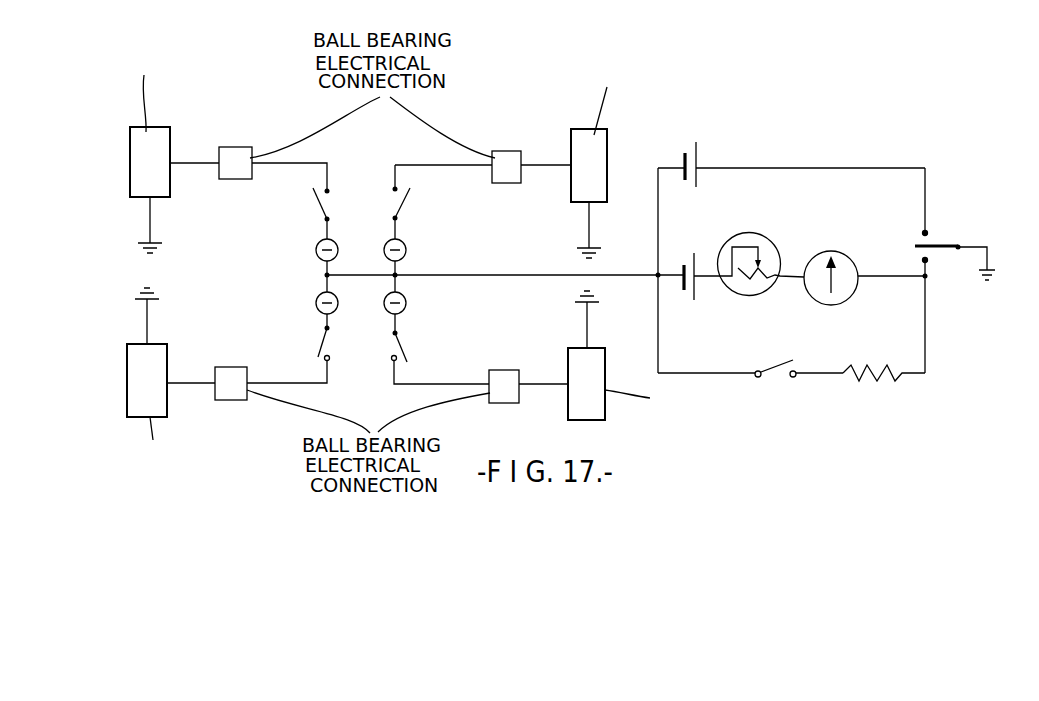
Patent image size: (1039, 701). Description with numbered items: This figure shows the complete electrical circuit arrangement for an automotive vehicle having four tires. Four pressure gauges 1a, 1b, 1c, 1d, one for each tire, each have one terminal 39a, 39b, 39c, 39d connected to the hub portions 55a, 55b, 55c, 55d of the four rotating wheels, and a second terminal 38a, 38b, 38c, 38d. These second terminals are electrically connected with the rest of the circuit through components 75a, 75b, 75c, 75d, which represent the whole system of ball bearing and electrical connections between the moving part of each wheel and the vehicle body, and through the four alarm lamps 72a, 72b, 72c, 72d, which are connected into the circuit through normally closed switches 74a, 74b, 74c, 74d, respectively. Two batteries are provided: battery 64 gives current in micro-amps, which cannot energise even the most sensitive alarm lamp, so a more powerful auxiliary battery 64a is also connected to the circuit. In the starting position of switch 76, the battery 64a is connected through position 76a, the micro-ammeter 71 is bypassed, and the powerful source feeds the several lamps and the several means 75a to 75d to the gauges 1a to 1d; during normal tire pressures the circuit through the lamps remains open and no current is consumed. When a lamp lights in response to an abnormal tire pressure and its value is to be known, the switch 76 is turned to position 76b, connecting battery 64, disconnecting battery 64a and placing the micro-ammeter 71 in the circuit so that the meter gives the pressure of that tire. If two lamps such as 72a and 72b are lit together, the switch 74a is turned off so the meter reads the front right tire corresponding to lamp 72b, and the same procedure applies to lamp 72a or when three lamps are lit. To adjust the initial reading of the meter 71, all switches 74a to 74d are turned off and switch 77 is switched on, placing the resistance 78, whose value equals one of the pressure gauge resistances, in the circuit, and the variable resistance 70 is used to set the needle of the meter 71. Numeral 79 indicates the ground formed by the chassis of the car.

The pressure gauge 1a is at (130, 140).
The pressure gauge 1b is at (125, 410).
The pressure gauge 1c is at (607, 150).
The pressure gauge 1d is at (606, 419).
The pressure gauge terminal 38a is at (191, 163).
The pressure gauge terminal 38b is at (193, 384).
The pressure gauge terminal 38c is at (541, 165).
The pressure gauge terminal 38d is at (540, 385).
The pressure gauge terminal 39a is at (150, 215).
The pressure gauge terminal 39b is at (147, 330).
The pressure gauge terminal 39c is at (589, 219).
The pressure gauge terminal 39d is at (586, 332).
The hub portion 55a is at (145, 245).
The hub portion 55b is at (143, 295).
The hub portion 55c is at (585, 249).
The hub portion 55d is at (583, 300).
The alarm lamp 72a is at (316, 244).
The alarm lamp 72b is at (316, 306).
The alarm lamp 72c is at (400, 240).
The alarm lamp 72d is at (407, 303).
The normally closed switch 74a is at (312, 194).
The normally closed switch 74b is at (318, 333).
The normally closed switch 74c is at (407, 200).
The normally closed switch 74d is at (405, 346).
The ball bearing electrical connection 75a is at (252, 148).
The ball bearing electrical connection 75b is at (246, 392).
The ball bearing electrical connection 75c is at (498, 151).
The ball bearing electrical connection 75d is at (500, 404).
The battery 64 is at (690, 296).
The auxiliary battery 64a is at (697, 150).
The variable resistance 70 is at (760, 273).
The micro-ammeter 71 is at (837, 306).
The switch 76 is at (960, 243).
The switch position 76a is at (932, 232).
The switch position 76b is at (928, 262).
The switch 77 is at (772, 378).
The resistance 78 is at (870, 364).
The ground 79 is at (995, 278).